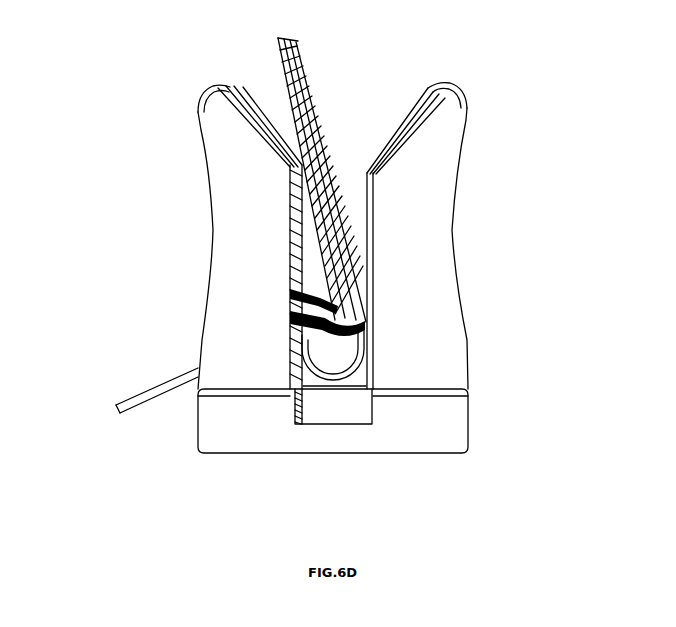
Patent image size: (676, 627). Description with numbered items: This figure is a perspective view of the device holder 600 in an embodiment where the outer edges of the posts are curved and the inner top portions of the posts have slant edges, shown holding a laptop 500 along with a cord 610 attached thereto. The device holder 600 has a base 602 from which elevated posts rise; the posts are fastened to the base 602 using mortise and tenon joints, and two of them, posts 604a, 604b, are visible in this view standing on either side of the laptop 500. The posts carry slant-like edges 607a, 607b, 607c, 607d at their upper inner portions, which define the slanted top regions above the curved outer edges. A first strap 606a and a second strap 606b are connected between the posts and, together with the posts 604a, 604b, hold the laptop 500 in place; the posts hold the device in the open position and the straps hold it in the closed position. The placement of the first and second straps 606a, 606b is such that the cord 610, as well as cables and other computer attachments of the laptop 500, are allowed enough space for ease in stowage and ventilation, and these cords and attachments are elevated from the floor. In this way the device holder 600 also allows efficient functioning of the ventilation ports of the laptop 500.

The device holder 600 is at (119, 60).
The laptop 500 is at (300, 62).
The base 602 is at (278, 452).
The post 604a is at (212, 288).
The post 604b is at (457, 215).
The first strap 606a is at (290, 322).
The second strap 606b is at (300, 302).
The slant-like edge 607a is at (265, 145).
The slant-like edge 607b is at (398, 138).
The slant-like edge 607c is at (260, 112).
The slant-like edge 607d is at (407, 120).
The cord 610 is at (143, 392).